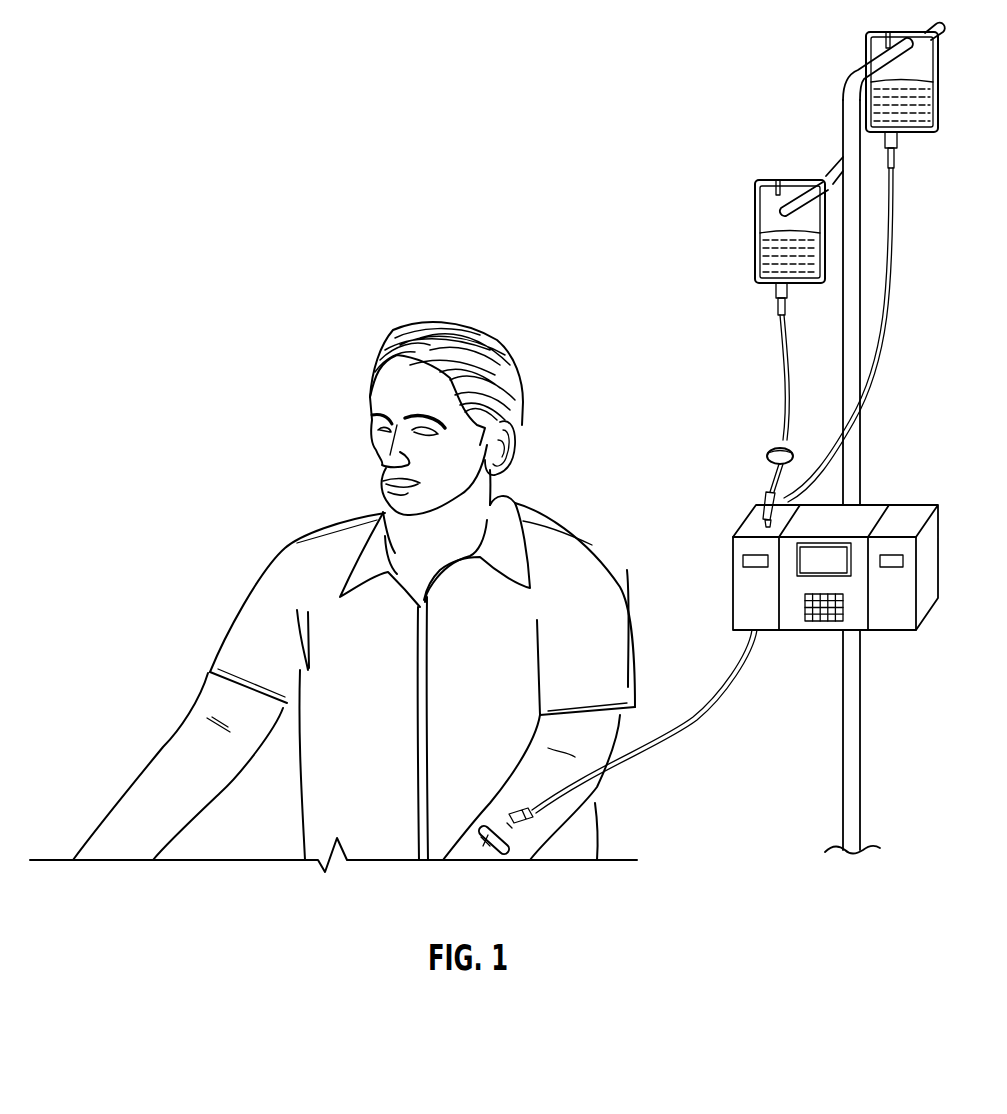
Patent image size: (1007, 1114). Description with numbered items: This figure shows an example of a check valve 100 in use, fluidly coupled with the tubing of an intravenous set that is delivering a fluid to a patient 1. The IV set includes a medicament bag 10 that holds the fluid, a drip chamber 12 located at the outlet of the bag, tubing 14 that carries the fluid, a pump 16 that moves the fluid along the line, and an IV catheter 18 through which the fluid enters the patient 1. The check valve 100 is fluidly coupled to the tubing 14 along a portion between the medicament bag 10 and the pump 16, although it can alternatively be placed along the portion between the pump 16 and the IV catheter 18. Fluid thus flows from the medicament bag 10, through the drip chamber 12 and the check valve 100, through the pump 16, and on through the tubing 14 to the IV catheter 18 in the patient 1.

The patient 1 is at (336, 508).
The medicament bag 10 is at (765, 256).
The drip chamber 12 is at (777, 307).
The tubing 14 is at (783, 395).
The check valve 100 is at (768, 455).
The pump 16 is at (742, 600).
The IV catheter 18 is at (514, 828).